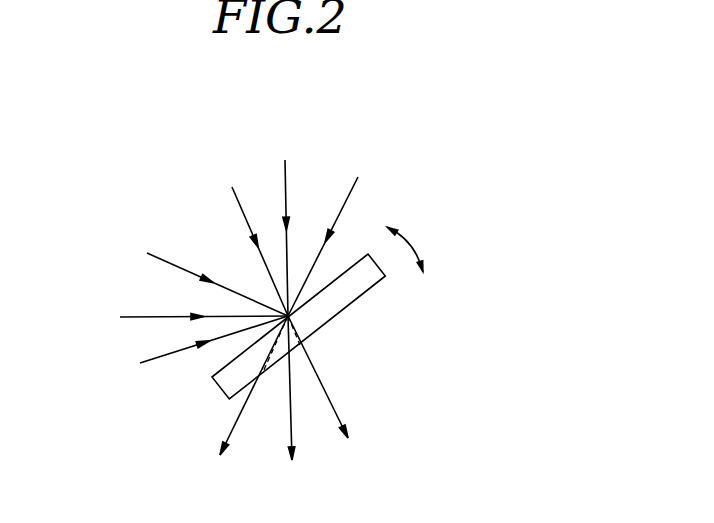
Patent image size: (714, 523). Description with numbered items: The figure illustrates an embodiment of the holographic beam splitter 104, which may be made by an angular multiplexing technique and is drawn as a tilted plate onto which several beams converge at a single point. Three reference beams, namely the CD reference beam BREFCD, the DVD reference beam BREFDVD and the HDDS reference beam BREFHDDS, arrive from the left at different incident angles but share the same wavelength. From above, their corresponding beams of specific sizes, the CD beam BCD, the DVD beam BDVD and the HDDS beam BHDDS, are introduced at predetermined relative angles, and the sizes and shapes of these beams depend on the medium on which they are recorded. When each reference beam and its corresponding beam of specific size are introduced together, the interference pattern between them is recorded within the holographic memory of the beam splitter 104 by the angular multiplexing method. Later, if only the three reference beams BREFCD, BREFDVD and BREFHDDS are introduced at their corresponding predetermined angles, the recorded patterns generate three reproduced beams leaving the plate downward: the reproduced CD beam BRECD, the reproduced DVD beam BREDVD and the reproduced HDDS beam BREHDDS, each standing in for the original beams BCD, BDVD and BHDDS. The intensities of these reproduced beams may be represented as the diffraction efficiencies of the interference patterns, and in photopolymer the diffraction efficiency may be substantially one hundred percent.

The holographic beam splitter 104 is at (464, 106).
The beam of specific size for CD BCD is at (241, 234).
The beam of specific size for DVD BDVD is at (291, 219).
The beam of specific size for HDDS BHDDS is at (346, 230).
The HDDS reference beam BREFHDDS is at (196, 261).
The DVD reference beam BREFDVD is at (175, 320).
The CD reference beam BREFCD is at (181, 355).
The reproduced beam for HDDS BREHDDS is at (231, 410).
The reproduced beam for DVD BREDVD is at (308, 411).
The reproduced beam for CD BRECD is at (338, 398).